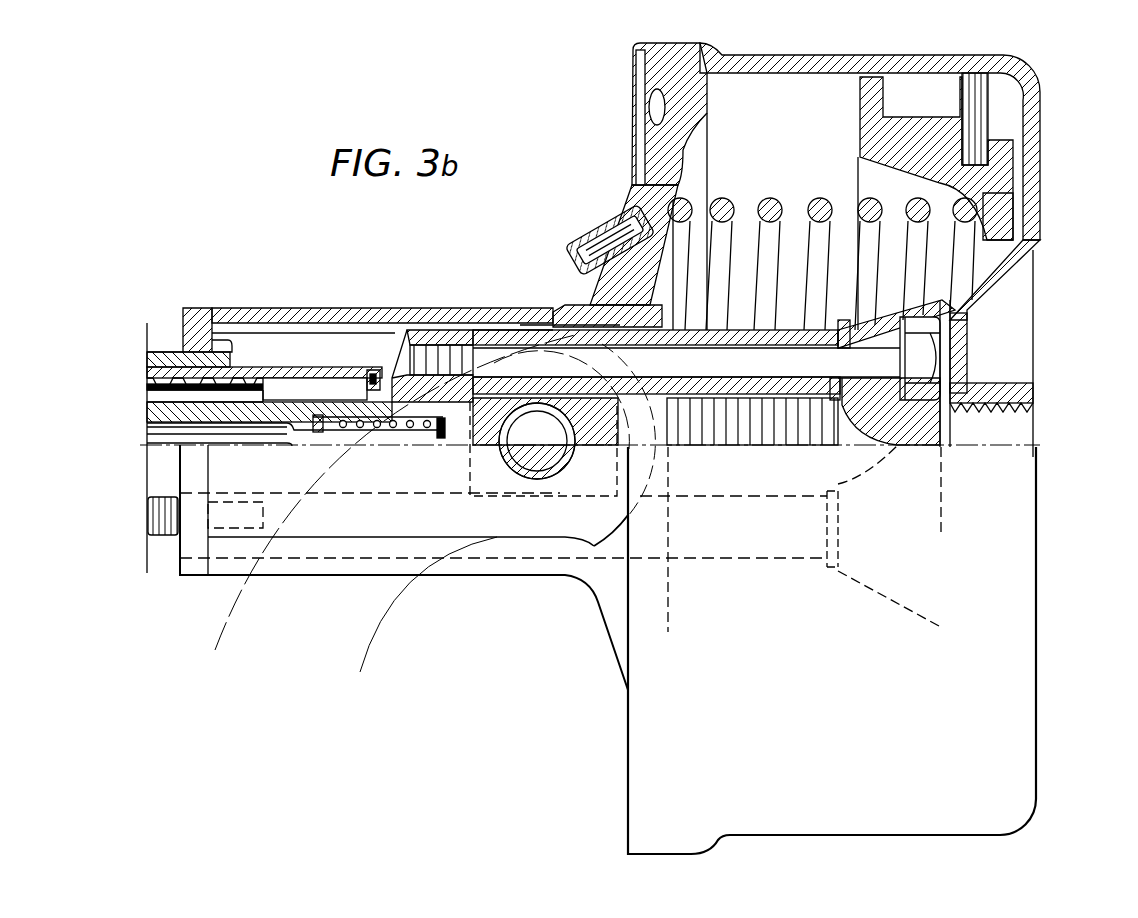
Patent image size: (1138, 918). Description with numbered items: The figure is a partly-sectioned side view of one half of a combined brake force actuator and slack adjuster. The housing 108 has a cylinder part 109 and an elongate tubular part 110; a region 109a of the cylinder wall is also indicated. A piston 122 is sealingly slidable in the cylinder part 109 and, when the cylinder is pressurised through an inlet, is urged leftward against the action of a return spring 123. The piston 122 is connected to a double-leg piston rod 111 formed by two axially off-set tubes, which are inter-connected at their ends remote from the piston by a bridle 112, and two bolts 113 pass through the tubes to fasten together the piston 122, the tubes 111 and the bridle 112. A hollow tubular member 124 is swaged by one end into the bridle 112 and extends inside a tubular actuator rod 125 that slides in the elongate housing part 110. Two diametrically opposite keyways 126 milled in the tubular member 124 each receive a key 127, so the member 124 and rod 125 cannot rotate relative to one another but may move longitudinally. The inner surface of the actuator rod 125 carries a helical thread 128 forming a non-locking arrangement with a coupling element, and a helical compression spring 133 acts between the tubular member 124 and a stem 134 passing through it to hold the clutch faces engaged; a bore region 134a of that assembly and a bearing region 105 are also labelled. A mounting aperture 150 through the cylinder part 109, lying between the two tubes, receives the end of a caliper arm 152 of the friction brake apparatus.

The bearing block 105 is at (596, 442).
The housing 108 is at (170, 338).
The cylinder part 109 is at (798, 75).
The housing wall 109a is at (1020, 431).
The elongate tubular part 110 is at (272, 315).
The double-leg piston rod 111 is at (546, 330).
The bridle 112 is at (457, 330).
The bolts 113 is at (706, 358).
The piston 122 is at (860, 120).
The return spring 123 is at (817, 200).
The hollow tubular member 124 is at (165, 408).
The tubular actuator rod 125 is at (160, 369).
The keyways 126 is at (162, 396).
The key 127 is at (352, 382).
The helical thread 128 is at (240, 370).
The helical compression spring 133 is at (420, 442).
The stem 134 is at (163, 437).
The bearing bore 134a is at (477, 442).
The mounting aperture 150 is at (547, 481).
The caliper arm 152 is at (383, 610).